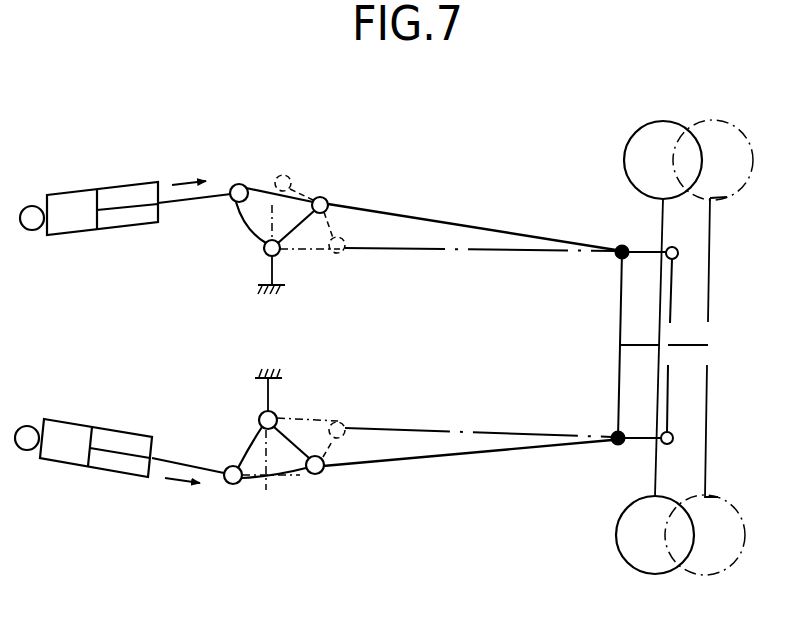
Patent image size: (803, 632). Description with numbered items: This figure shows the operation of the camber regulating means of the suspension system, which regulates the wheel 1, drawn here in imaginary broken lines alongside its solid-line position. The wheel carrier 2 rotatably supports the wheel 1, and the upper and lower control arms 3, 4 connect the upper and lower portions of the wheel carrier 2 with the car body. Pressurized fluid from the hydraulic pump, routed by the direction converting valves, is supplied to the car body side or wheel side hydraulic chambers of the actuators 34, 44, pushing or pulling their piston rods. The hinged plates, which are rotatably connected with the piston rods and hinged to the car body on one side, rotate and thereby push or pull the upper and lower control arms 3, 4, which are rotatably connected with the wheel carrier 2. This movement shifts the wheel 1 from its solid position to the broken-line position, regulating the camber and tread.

The wheel 1 is at (665, 121).
The wheel carrier 2 is at (622, 318).
The upper control arm 3 is at (415, 216).
The lower control arm 4 is at (460, 457).
The actuator 34 is at (118, 194).
The actuator 44 is at (115, 440).